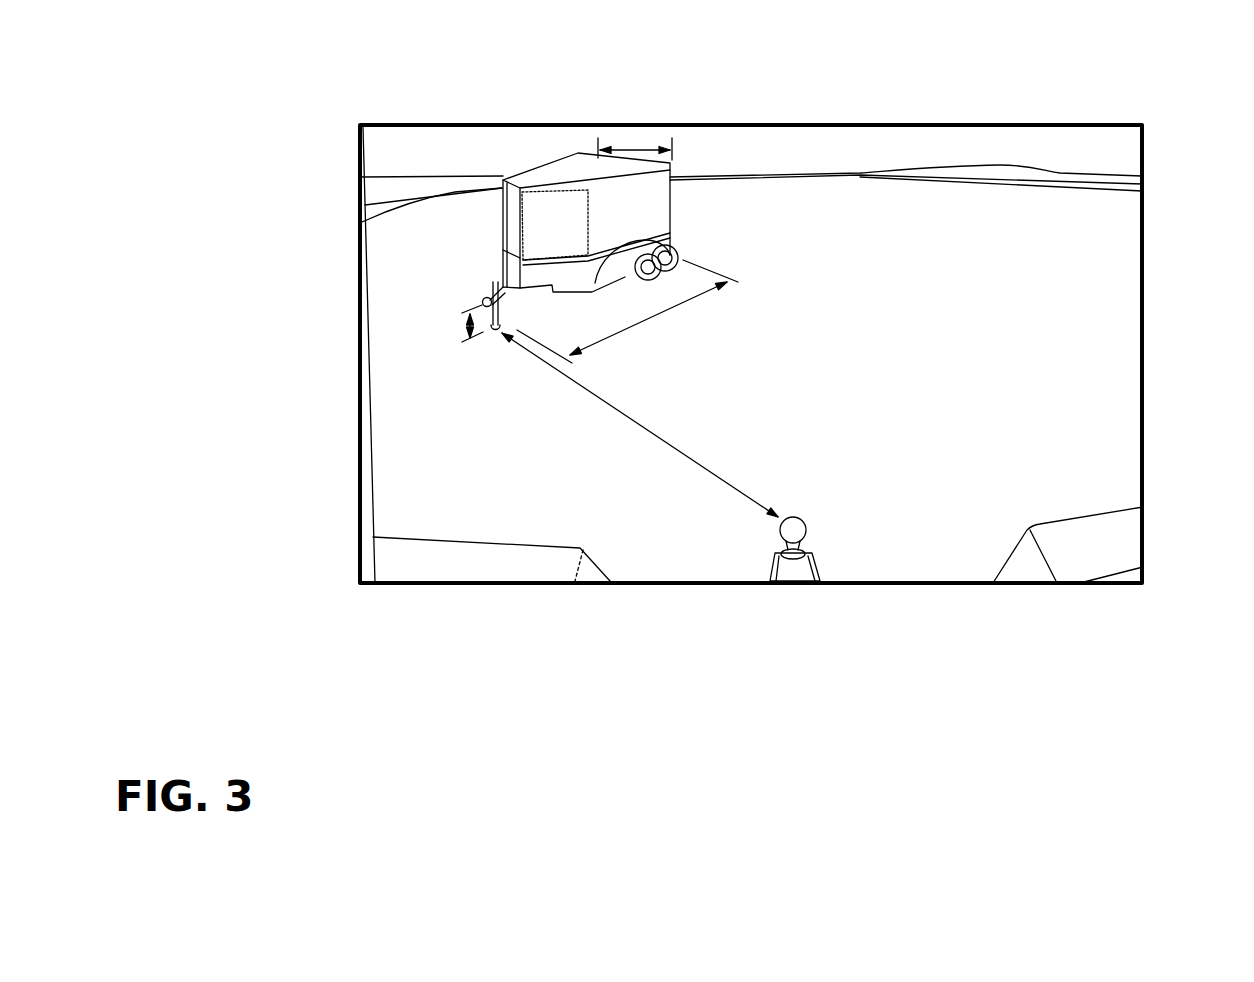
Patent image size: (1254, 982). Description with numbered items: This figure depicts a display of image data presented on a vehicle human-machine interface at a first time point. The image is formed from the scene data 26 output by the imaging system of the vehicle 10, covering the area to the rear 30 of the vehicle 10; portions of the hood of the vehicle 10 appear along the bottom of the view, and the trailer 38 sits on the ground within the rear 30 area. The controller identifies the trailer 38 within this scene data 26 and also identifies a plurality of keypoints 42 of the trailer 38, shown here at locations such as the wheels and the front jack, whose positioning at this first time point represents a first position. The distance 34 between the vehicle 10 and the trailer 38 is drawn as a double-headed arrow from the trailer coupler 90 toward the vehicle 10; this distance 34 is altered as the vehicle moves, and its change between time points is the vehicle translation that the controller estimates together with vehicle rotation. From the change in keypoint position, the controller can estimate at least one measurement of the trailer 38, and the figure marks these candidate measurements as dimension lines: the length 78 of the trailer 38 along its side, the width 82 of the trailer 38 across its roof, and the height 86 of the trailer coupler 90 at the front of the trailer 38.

The vehicle 10 is at (1100, 512).
The scene data 26 is at (1090, 303).
The rear 30 is at (888, 364).
The distance 34 is at (587, 387).
The trailer 38 is at (568, 158).
The keypoints 42 is at (487, 301).
The length 78 is at (700, 302).
The width 82 is at (633, 145).
The height 86 is at (467, 323).
The trailer coupler 90 is at (483, 303).